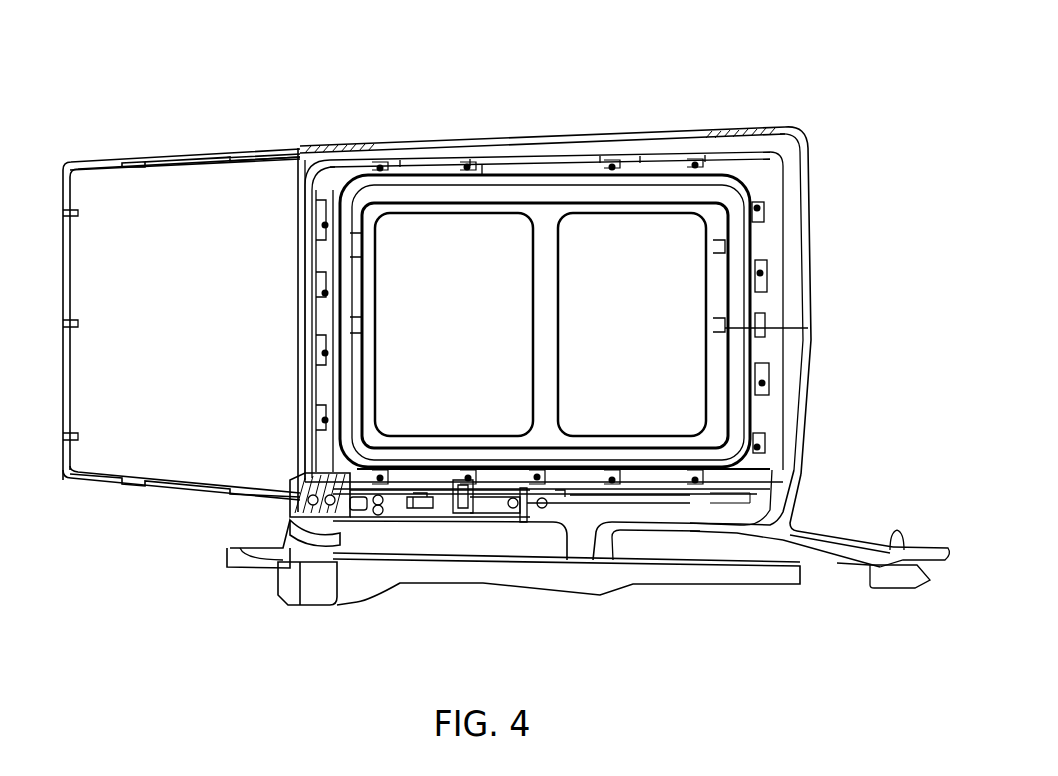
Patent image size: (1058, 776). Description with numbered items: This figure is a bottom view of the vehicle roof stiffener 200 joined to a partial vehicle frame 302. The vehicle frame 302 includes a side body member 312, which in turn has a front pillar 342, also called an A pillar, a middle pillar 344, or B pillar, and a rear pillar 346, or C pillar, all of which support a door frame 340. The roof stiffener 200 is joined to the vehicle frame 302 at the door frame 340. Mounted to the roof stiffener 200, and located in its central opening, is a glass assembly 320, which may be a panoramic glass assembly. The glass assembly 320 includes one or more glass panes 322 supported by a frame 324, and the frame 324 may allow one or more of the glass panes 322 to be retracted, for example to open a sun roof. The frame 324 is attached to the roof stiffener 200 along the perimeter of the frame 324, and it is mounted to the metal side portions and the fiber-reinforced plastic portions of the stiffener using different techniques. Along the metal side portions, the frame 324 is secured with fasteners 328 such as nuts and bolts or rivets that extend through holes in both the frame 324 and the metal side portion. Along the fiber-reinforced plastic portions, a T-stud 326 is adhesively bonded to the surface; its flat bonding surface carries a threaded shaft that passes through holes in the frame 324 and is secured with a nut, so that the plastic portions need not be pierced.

The vehicle roof stiffener 200 is at (133, 66).
The vehicle frame 302 is at (352, 628).
The side body member 312 is at (481, 602).
The glass assembly 320 is at (501, 178).
The glass panes 322 is at (482, 165).
The frame 324 is at (437, 193).
The T-stud 326 is at (325, 225).
The fasteners 328 is at (467, 167).
The door frame 340 is at (440, 515).
The front pillar 342 is at (837, 533).
The middle pillar 344 is at (567, 553).
The rear pillar 346 is at (293, 542).